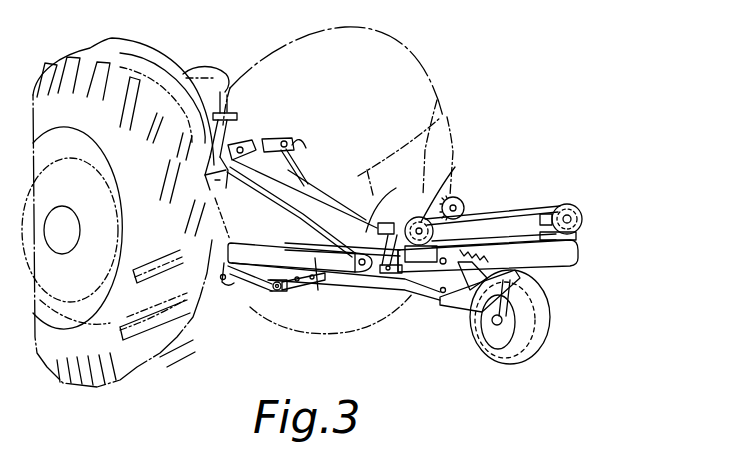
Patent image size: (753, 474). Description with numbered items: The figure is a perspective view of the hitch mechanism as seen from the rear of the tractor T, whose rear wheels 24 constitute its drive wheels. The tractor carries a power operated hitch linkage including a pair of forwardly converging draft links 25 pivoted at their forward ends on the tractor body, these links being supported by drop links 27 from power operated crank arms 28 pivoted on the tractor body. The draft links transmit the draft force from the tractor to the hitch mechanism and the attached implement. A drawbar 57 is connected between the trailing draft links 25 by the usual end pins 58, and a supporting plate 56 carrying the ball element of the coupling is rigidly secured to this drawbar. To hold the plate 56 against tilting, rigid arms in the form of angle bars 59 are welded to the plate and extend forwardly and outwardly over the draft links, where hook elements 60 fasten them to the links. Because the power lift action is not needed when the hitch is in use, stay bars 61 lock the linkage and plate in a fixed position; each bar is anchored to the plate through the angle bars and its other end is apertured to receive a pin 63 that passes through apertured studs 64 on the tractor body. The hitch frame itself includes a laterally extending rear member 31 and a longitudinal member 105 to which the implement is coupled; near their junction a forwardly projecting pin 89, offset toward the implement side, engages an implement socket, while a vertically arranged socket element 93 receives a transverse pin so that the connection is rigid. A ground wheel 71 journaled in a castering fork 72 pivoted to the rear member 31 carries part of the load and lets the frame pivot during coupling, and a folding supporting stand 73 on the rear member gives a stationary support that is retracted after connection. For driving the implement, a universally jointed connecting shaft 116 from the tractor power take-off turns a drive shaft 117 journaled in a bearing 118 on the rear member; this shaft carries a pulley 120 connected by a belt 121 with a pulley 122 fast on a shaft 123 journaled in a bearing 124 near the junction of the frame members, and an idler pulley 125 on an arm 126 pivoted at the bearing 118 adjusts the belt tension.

The tractor T is at (104, 34).
The rear wheels 24 is at (447, 114).
The draft links 25 is at (226, 283).
The drop links 27 is at (311, 188).
The crank arms 28 is at (247, 147).
The rear member 31 is at (545, 265).
The supporting plate 56 is at (433, 296).
The drawbar 57 is at (298, 286).
The end pins 58 is at (276, 290).
The angle bars 59 is at (323, 284).
The hook elements 60 is at (237, 275).
The stay bars 61 is at (298, 181).
The pin 63 is at (217, 182).
The apertured studs 64 is at (238, 145).
The ground wheel 71 is at (540, 338).
The castering fork 72 is at (493, 318).
The supporting stand 73 is at (454, 312).
The pin 89 is at (580, 252).
The socket element 93 is at (576, 233).
The tongue beam 105 is at (280, 228).
The connecting shaft 116 is at (394, 199).
The drive shaft 117 is at (453, 185).
The bearing 118 is at (392, 273).
The pulley 120 is at (418, 228).
The belt 121 is at (500, 213).
The pulley 122 is at (580, 204).
The shaft 123 is at (580, 220).
The bearing 124 is at (543, 218).
The idler pulley 125 is at (462, 205).
The arm 126 is at (437, 223).